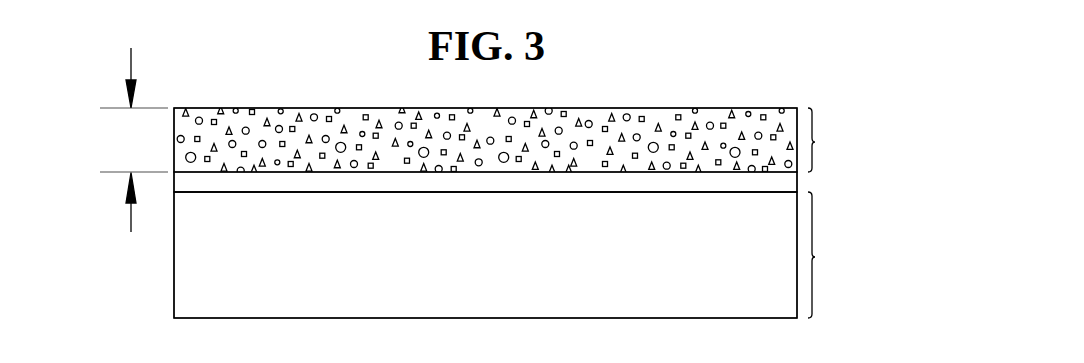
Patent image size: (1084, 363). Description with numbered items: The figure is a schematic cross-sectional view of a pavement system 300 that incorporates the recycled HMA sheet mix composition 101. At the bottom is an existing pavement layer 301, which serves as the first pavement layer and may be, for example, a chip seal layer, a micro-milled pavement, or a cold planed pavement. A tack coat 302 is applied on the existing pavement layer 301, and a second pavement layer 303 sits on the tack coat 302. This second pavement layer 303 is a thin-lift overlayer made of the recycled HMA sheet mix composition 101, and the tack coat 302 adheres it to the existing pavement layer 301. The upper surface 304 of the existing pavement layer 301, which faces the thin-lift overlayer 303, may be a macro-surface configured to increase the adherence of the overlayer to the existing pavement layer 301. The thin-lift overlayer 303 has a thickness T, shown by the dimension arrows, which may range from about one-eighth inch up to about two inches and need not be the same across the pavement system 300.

The pavement system 300 is at (814, 60).
The existing pavement layer 301 is at (815, 257).
The tack coat 302 is at (769, 182).
The second pavement layer 303 is at (544, 121).
The upper surface 304 is at (267, 192).
The recycled HMA sheet mix composition 101 is at (660, 128).
The thickness T is at (128, 140).